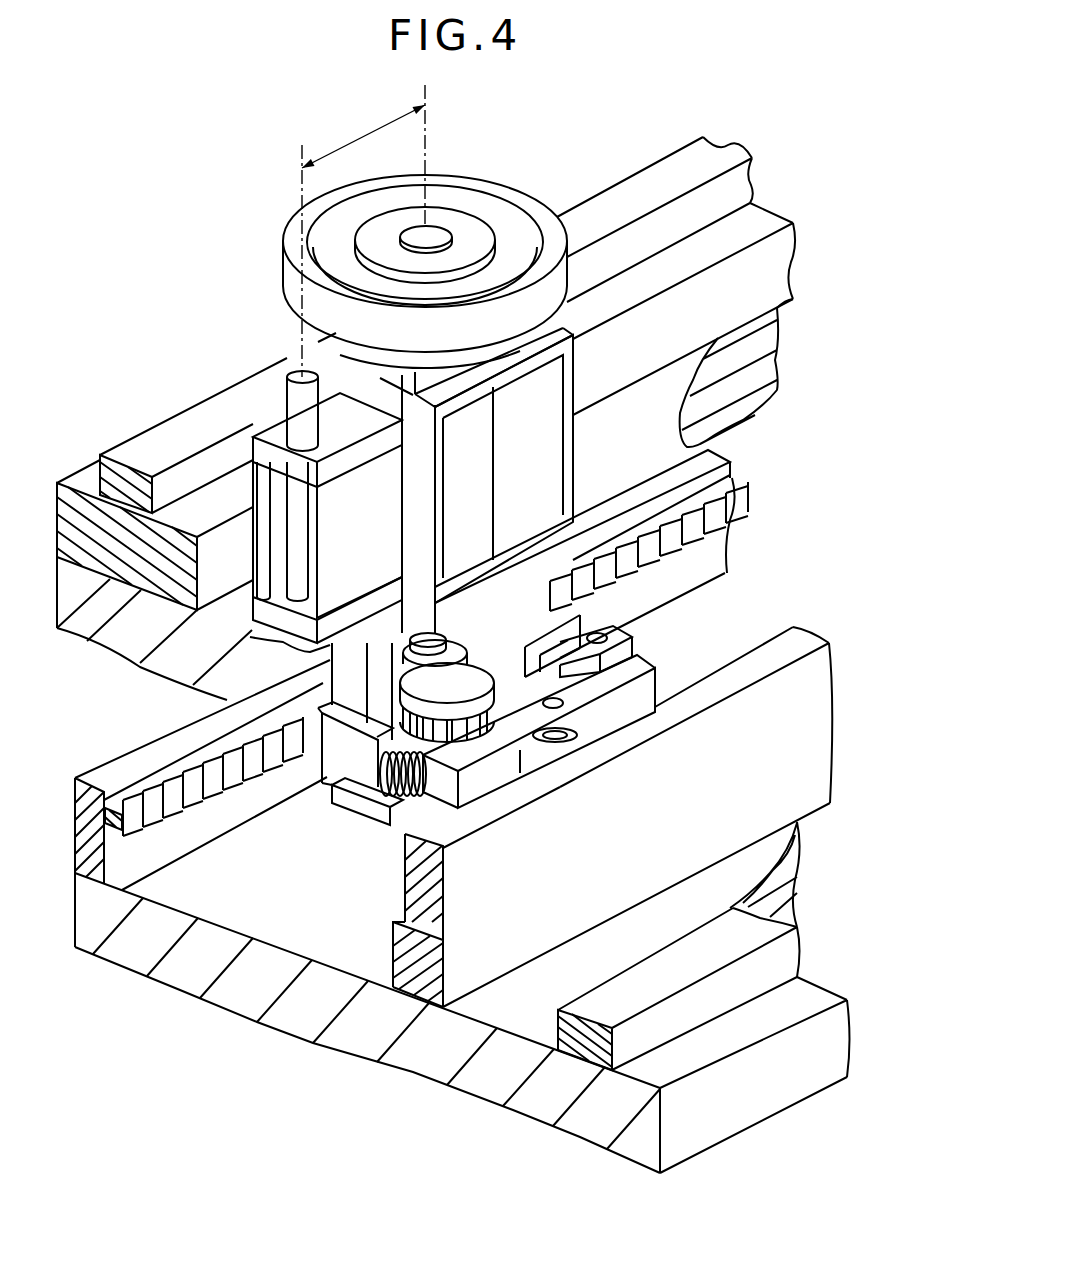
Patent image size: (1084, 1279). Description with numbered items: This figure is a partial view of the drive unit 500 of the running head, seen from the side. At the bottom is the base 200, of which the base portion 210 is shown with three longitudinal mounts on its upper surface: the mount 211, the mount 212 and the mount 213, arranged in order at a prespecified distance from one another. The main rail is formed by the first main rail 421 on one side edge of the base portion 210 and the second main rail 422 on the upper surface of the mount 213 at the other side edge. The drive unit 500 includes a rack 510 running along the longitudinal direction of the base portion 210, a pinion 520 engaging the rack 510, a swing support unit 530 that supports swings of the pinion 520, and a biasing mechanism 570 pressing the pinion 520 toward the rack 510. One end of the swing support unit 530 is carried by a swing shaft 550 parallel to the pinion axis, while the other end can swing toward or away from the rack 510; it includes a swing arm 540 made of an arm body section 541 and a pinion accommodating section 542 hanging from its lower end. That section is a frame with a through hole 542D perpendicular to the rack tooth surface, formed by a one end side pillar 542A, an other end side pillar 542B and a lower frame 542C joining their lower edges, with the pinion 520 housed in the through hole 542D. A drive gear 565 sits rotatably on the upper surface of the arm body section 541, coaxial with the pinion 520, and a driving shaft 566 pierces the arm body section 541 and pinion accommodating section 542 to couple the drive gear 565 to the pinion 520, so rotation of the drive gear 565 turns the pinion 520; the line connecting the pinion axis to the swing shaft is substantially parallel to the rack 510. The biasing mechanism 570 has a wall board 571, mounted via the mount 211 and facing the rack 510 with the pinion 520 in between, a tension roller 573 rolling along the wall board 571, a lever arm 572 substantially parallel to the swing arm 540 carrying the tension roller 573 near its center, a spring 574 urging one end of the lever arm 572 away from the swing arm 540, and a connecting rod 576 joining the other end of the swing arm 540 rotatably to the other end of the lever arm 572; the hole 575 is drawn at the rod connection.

The drive unit 500 is at (593, 125).
The drive gear 565 is at (512, 192).
The driving shaft 566 is at (435, 235).
The swing support unit 530 is at (186, 310).
The swing shaft 550 is at (298, 372).
The swing arm 540 is at (277, 430).
The arm body section 541 is at (262, 470).
The second main rail 422 is at (127, 452).
The mount 213 is at (75, 493).
The through hole 542D is at (512, 640).
The pinion 520 is at (482, 652).
The hole 575 is at (598, 632).
The connecting rod 576 is at (632, 633).
The biasing mechanism 570 is at (690, 617).
The wall board 571 is at (432, 897).
The lever arm 572 is at (633, 700).
The tension roller 573 is at (597, 718).
The other end side pillar 542B is at (538, 678).
The spring 574 is at (440, 785).
The pinion accommodating section 542 is at (376, 683).
The one end side pillar 542A is at (383, 718).
The lower frame 542C is at (378, 808).
The rack 510 is at (130, 797).
The mount 212 is at (95, 875).
The mount 211 is at (425, 1005).
The first main rail 421 is at (588, 1030).
The base portion 210 is at (545, 1104).
The base 200 is at (325, 1085).